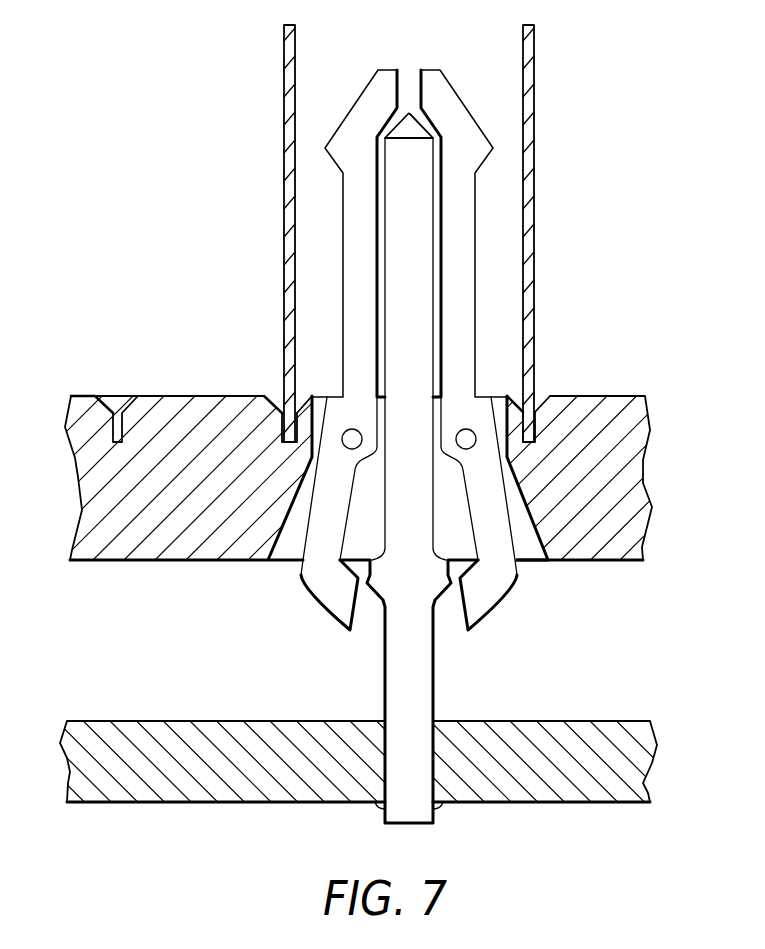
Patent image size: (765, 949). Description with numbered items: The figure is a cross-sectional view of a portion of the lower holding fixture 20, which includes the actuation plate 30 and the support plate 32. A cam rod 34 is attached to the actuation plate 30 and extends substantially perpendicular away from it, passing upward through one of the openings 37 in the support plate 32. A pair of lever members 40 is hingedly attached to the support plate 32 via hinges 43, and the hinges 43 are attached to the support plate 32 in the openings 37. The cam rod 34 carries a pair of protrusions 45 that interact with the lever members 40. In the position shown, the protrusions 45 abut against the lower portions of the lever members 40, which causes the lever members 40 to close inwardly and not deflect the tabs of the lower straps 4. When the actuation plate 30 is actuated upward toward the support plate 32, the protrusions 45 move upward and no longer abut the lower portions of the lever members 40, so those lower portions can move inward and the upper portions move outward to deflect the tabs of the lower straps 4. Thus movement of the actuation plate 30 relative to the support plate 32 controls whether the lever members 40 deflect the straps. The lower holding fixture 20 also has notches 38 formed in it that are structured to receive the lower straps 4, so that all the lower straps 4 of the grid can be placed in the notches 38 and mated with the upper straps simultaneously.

The lower holding fixture 20 is at (158, 131).
The lower straps 4 is at (280, 164).
The lever members 40 is at (409, 355).
The notches 38 is at (115, 403).
The hinges 43 is at (350, 438).
The support plate 32 is at (382, 472).
The openings 37 is at (530, 553).
The protrusions 45 is at (369, 607).
The cam rods 34 is at (434, 688).
The actuation plate 30 is at (552, 720).